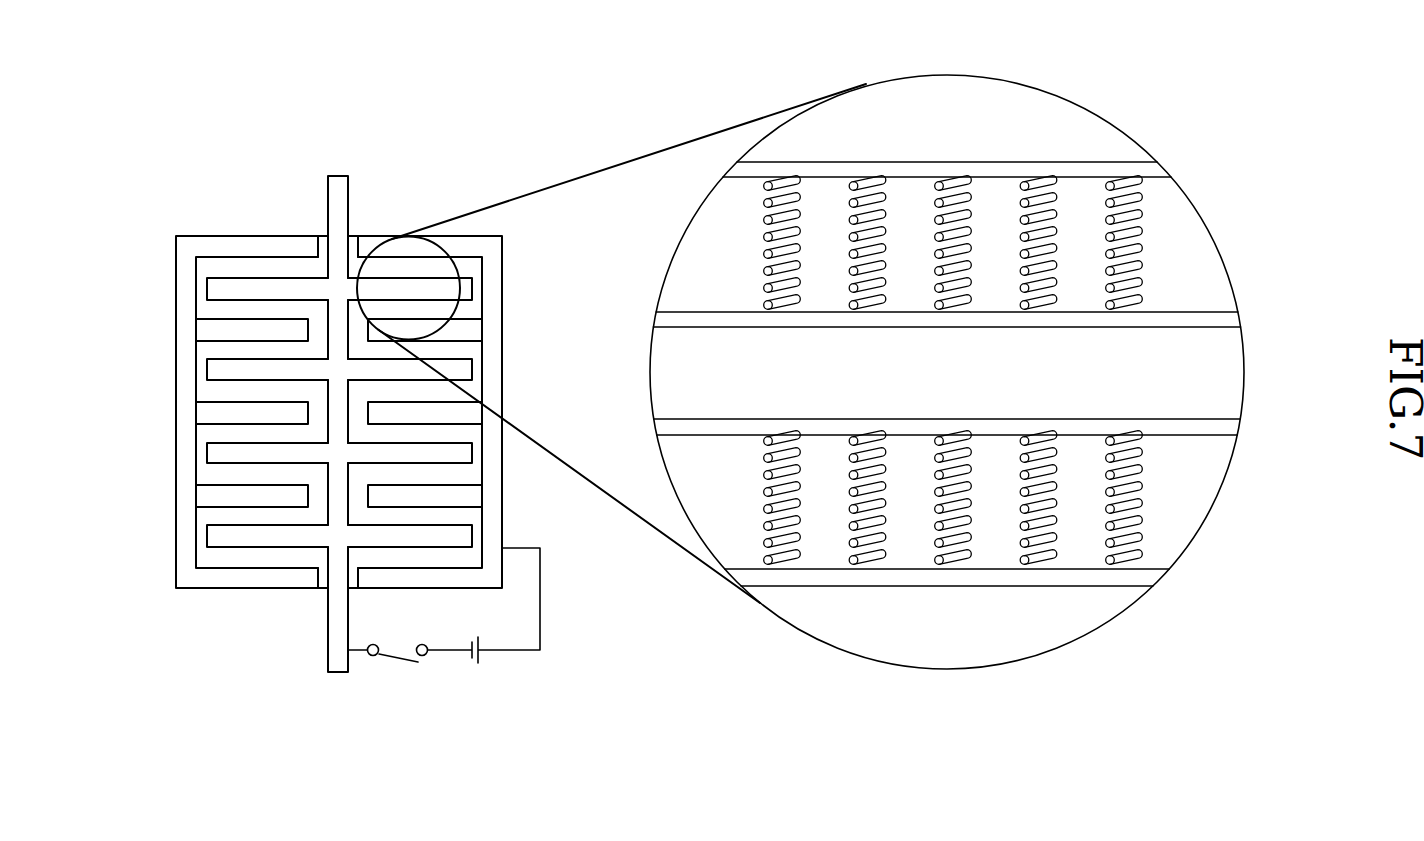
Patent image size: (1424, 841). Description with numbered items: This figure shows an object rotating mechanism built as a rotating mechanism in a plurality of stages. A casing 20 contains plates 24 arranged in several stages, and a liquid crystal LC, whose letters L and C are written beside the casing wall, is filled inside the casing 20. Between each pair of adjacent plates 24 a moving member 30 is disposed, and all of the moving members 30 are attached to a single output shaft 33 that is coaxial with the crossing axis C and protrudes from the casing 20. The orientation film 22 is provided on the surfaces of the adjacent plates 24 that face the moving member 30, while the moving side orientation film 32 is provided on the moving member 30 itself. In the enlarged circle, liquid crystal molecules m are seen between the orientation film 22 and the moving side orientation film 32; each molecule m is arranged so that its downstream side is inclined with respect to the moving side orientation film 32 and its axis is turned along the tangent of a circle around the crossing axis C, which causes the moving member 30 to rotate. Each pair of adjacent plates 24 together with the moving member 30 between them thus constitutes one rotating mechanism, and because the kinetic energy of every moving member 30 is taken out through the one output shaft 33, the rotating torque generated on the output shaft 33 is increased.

The casing 20 is at (160, 220).
The orientation film 22 is at (467, 325).
The plates 24 is at (217, 325).
The moving member 30 is at (268, 283).
The moving side orientation film 32 is at (1205, 312).
The output shaft 33 is at (336, 180).
The liquid crystal molecule m is at (1135, 232).
The liquid crystal L is at (115, 241).
The crossing axis C is at (208, 270).